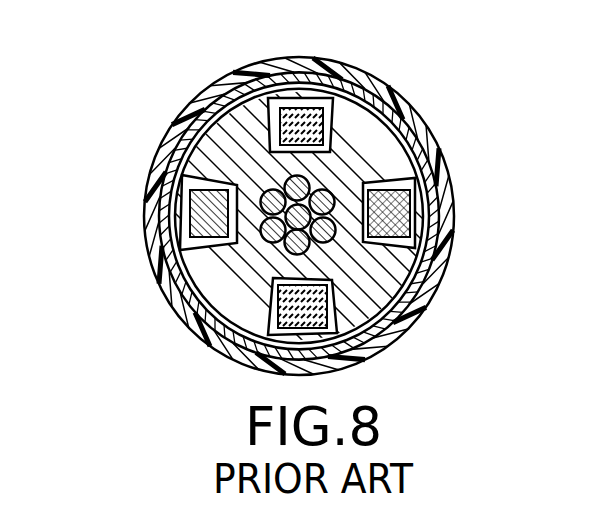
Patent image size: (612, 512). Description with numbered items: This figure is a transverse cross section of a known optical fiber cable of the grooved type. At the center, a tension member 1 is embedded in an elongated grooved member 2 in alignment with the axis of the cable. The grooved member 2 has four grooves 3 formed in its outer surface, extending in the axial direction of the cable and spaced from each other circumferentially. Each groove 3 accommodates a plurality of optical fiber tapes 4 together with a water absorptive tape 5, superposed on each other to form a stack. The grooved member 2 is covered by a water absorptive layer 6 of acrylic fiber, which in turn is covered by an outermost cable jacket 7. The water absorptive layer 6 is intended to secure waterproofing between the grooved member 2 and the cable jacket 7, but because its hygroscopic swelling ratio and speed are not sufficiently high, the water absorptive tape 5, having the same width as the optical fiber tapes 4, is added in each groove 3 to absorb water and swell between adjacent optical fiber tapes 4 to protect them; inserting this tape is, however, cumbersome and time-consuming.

The tension member 1 is at (385, 305).
The grooved member 2 is at (228, 270).
The grooves 3 is at (440, 191).
The optical fiber tapes 4 is at (284, 100).
The water absorptive tape 5 is at (240, 86).
The water absorptive layer 6 is at (157, 207).
The cable jacket 7 is at (403, 110).